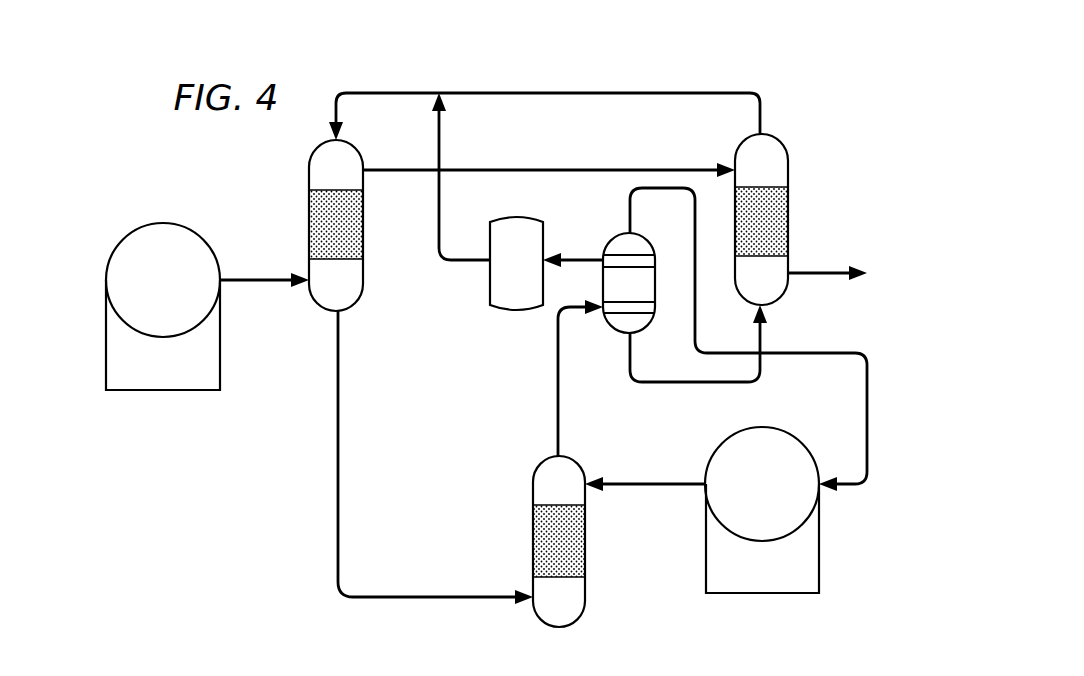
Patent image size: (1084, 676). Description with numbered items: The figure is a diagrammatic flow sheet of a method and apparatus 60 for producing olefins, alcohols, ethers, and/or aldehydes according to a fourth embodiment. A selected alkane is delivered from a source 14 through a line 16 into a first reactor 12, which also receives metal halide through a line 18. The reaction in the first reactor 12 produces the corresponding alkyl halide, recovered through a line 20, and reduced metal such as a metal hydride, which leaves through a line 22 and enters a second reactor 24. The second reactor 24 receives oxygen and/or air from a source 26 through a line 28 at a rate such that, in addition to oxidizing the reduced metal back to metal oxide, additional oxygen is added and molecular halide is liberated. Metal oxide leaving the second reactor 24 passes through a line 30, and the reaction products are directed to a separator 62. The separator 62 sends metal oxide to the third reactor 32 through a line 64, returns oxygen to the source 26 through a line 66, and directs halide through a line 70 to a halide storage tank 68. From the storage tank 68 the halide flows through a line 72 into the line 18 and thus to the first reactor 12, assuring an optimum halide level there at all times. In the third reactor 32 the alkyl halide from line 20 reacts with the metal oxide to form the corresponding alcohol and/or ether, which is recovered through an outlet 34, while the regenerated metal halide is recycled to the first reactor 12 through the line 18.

The first reactor 12 is at (309, 180).
The source 14 is at (163, 223).
The line 16 is at (262, 282).
The line 18 is at (545, 93).
The line 20 is at (565, 170).
The line 22 is at (338, 410).
The second reactor 24 is at (585, 590).
The source 26 is at (772, 593).
The line 28 is at (660, 484).
The line 30 is at (558, 385).
The third reactor 32 is at (788, 176).
The outlet 34 is at (825, 273).
The method and apparatus 60 is at (447, 52).
The separator 62 is at (618, 335).
The line 64 is at (684, 382).
The line 66 is at (810, 353).
The halide storage tank 68 is at (490, 290).
The line 70 is at (580, 260).
The line 72 is at (439, 225).